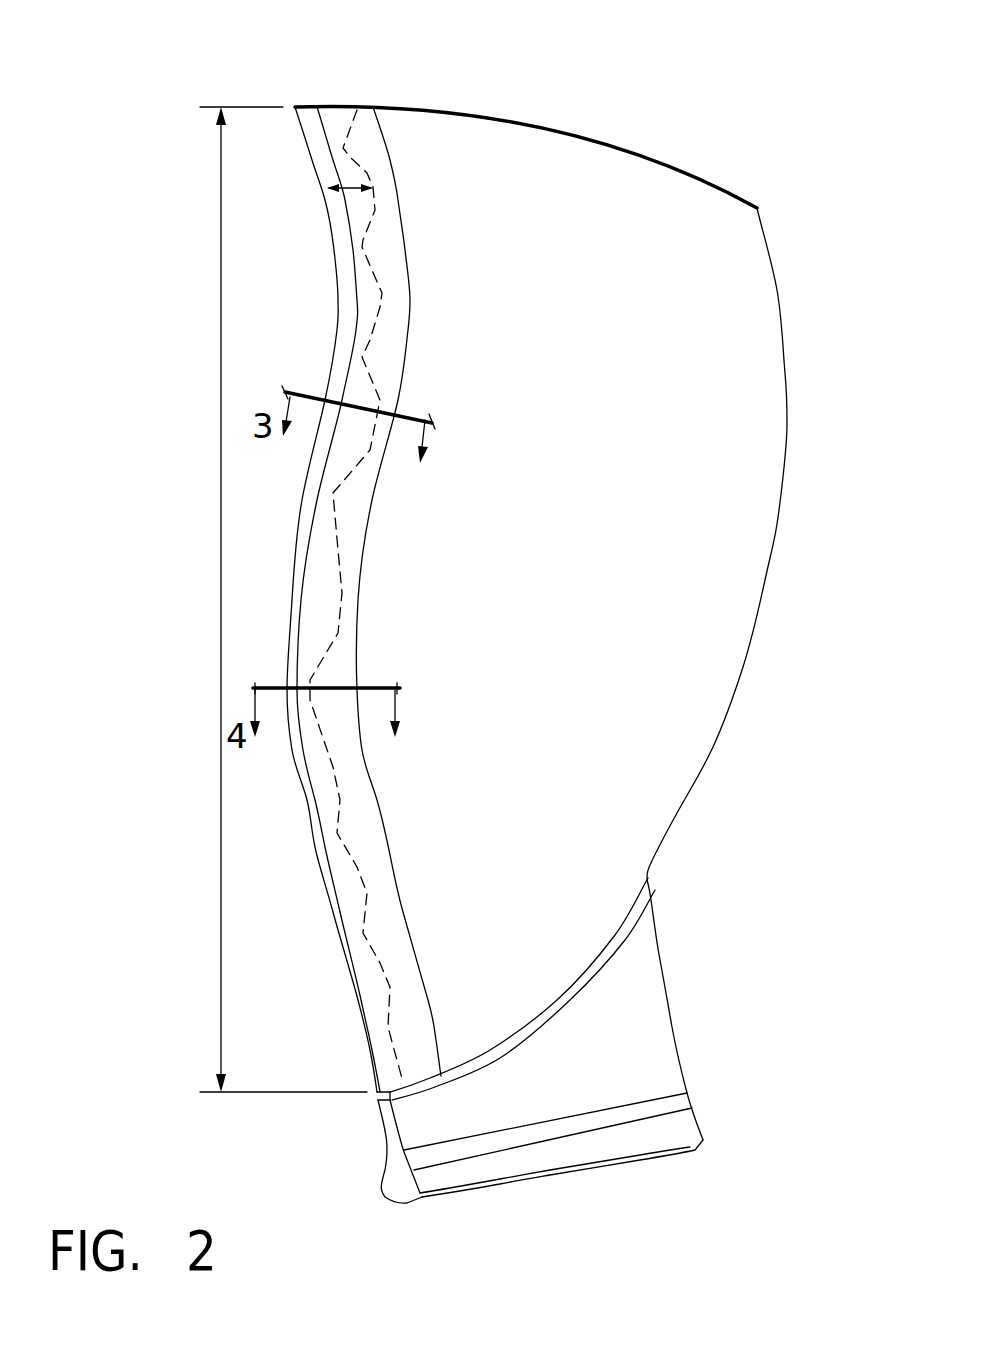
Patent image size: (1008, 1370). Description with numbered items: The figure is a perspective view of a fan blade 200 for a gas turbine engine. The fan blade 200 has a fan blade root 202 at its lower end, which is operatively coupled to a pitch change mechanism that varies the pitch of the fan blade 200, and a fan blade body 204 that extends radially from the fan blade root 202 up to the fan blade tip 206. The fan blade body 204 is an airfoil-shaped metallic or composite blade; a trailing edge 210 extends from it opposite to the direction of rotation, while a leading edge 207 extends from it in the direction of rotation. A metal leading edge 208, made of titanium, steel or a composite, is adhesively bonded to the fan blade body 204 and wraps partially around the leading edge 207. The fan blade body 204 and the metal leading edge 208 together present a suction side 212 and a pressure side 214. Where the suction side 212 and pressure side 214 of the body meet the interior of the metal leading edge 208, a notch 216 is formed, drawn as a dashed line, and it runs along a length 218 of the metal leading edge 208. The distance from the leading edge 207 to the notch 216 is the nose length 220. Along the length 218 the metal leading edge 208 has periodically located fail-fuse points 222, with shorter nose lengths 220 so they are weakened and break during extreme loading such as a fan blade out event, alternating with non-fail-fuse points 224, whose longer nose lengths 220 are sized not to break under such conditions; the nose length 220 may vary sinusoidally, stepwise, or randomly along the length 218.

The fan blade 200 is at (722, 62).
The fan blade root 202 is at (637, 1158).
The fan blade body 204 is at (580, 610).
The fan blade tip 206 is at (537, 125).
The leading edge 207 is at (340, 318).
The metal leading edge 208 is at (340, 552).
The trailing edge 210 is at (777, 533).
The suction side 212 is at (598, 457).
The pressure side 214 is at (337, 260).
The notch 216 is at (357, 130).
The length 218 is at (222, 643).
The nose length 220 is at (343, 187).
The fail-fuse points 222 is at (345, 147).
The non-fail-fuse points 224 is at (373, 186).